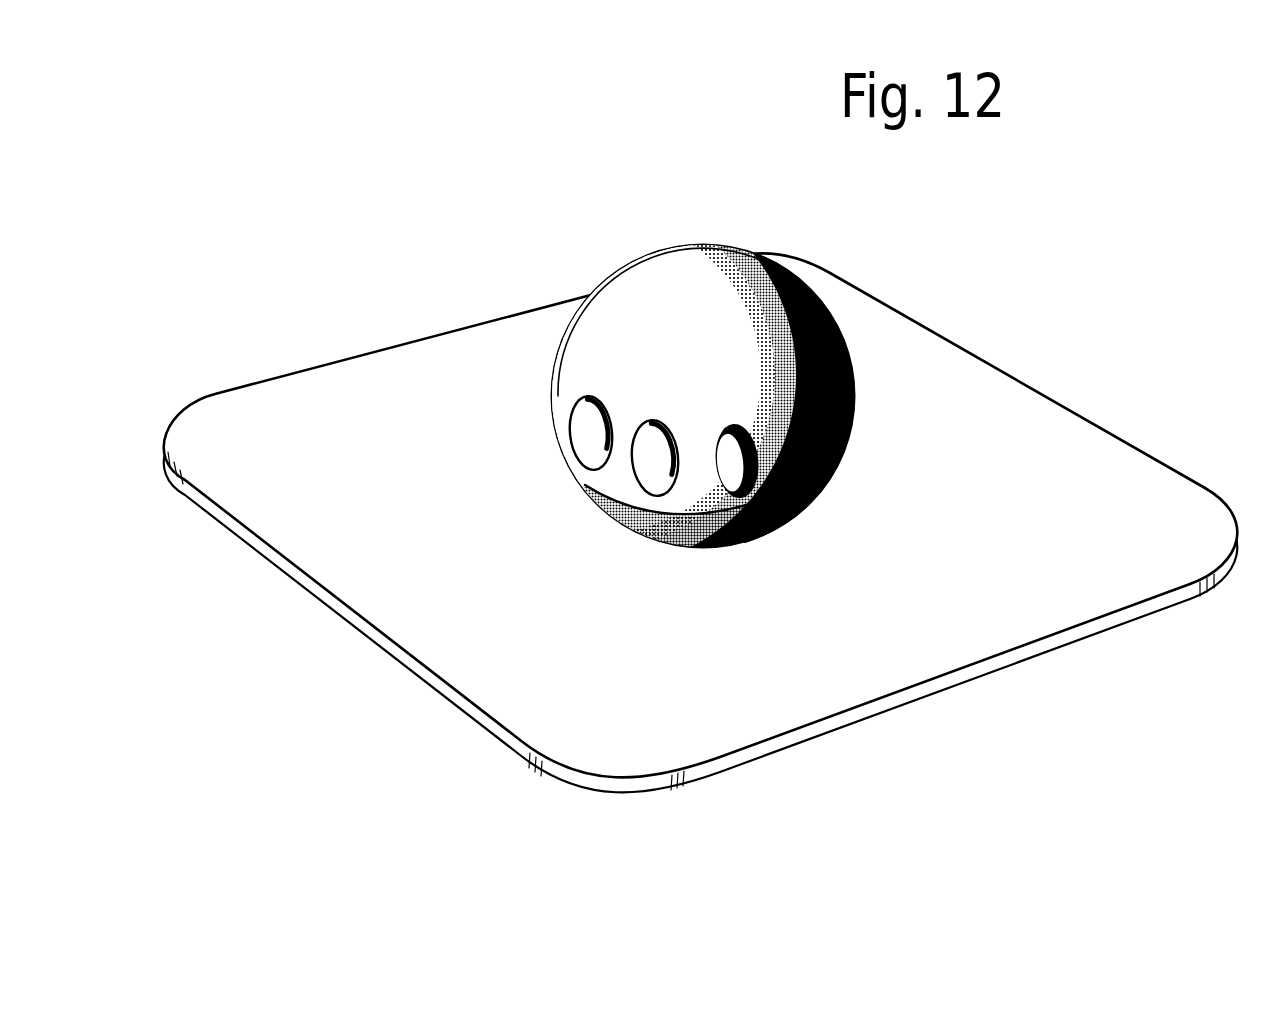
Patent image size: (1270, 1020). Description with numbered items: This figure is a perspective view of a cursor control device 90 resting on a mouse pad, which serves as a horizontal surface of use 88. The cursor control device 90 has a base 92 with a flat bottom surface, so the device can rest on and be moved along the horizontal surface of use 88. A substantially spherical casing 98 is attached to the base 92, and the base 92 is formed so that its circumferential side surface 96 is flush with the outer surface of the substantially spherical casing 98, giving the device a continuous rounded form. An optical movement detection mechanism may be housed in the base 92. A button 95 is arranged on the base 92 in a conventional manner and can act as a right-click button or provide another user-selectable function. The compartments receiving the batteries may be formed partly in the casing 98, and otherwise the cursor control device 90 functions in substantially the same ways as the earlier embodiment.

The horizontal surface of use 88 is at (1082, 445).
The cursor control device 90 is at (675, 374).
The base 92 is at (638, 535).
The button 95 is at (787, 513).
The circumferential side surface 96 is at (703, 540).
The substantially spherical casing 98 is at (783, 327).